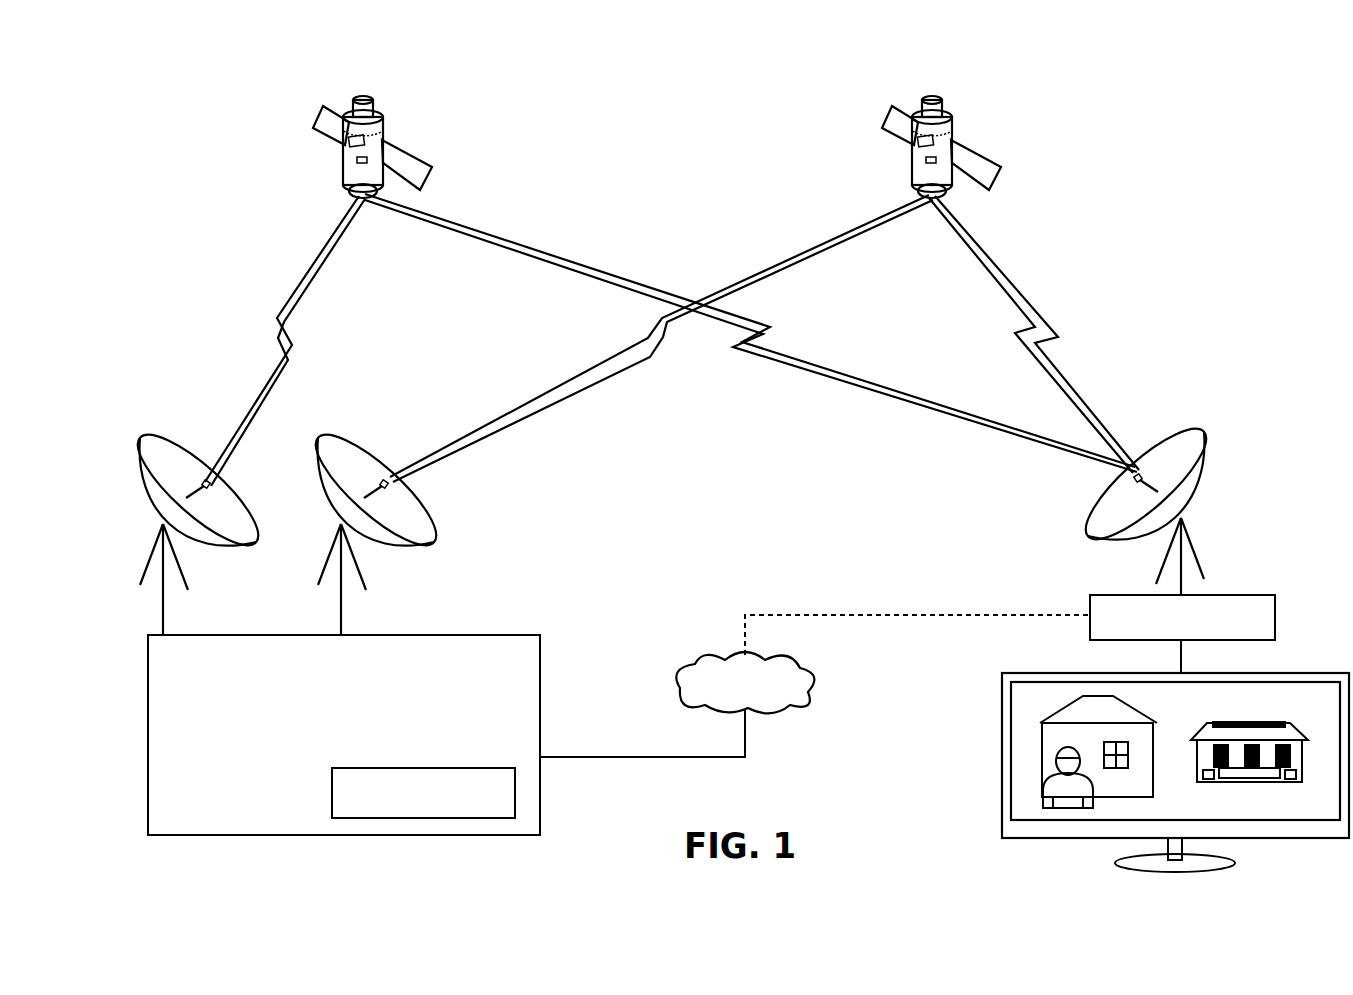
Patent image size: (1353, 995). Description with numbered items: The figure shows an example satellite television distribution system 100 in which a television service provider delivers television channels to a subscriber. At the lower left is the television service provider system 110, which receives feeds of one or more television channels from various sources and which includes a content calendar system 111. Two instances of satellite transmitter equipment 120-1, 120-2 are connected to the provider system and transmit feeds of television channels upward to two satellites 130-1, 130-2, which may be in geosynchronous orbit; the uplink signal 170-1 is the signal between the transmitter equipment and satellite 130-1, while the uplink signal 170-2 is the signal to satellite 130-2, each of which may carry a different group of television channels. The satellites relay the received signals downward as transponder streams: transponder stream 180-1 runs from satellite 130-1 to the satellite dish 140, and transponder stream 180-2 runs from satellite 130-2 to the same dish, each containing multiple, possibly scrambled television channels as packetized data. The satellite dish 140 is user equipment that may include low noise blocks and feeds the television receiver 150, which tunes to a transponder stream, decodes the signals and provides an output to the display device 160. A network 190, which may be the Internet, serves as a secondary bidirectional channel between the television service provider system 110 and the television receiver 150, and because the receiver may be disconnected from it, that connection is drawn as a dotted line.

The satellite television distribution system 100 is at (216, 177).
The television service provider system 110 is at (530, 635).
The content calendar system 111 is at (494, 768).
The satellite transmitter equipment 120-1 is at (178, 441).
The satellite transmitter equipment 120-2 is at (360, 430).
The satellite 130-1 is at (425, 160).
The satellite 130-2 is at (997, 160).
The satellite dish 140 is at (1189, 430).
The television receiver 150 is at (1244, 595).
The display device 160 is at (1318, 672).
The uplink signal 170-1 is at (316, 277).
The uplink signal 170-2 is at (797, 263).
The transponder stream 180-1 is at (530, 244).
The transponder stream 180-2 is at (1002, 266).
The network 190 is at (684, 664).